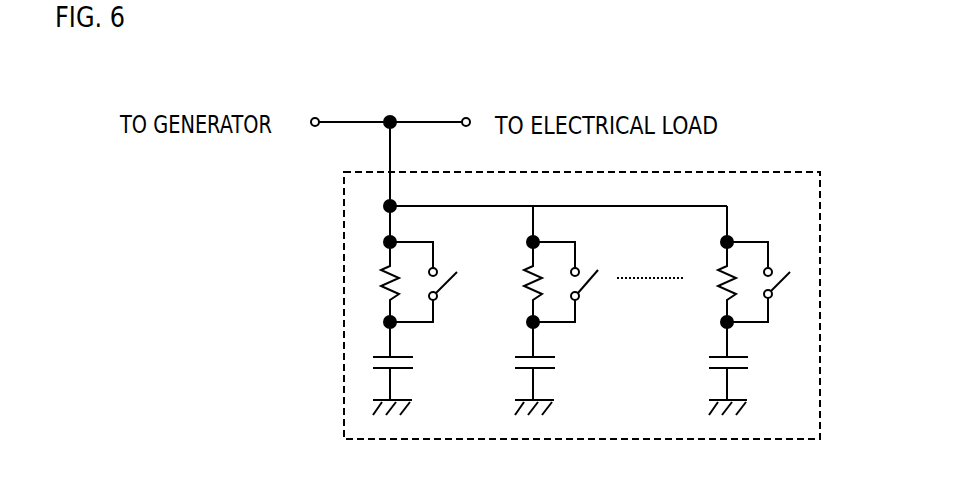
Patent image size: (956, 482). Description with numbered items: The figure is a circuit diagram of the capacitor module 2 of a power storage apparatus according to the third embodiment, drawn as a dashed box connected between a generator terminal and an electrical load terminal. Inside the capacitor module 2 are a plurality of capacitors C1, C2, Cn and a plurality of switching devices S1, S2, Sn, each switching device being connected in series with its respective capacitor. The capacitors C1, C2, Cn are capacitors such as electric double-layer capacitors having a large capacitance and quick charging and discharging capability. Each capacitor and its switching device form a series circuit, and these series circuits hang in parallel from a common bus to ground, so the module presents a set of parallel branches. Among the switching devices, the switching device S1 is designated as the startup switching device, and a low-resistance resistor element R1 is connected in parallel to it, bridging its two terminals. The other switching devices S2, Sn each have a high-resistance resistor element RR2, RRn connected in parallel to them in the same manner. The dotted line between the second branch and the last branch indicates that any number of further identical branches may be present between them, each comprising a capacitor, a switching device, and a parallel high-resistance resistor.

The capacitor module 2 is at (290, 248).
The low-resistance resistor element R1 is at (347, 295).
The high-resistance resistor element RR2 is at (504, 301).
The high-resistance resistor element RRn is at (698, 301).
The startup switching device S1 is at (451, 274).
The switching device S2 is at (591, 274).
The switching device Sn is at (766, 260).
The capacitor C1 is at (414, 376).
The capacitor C2 is at (560, 376).
The capacitor Cn is at (753, 376).